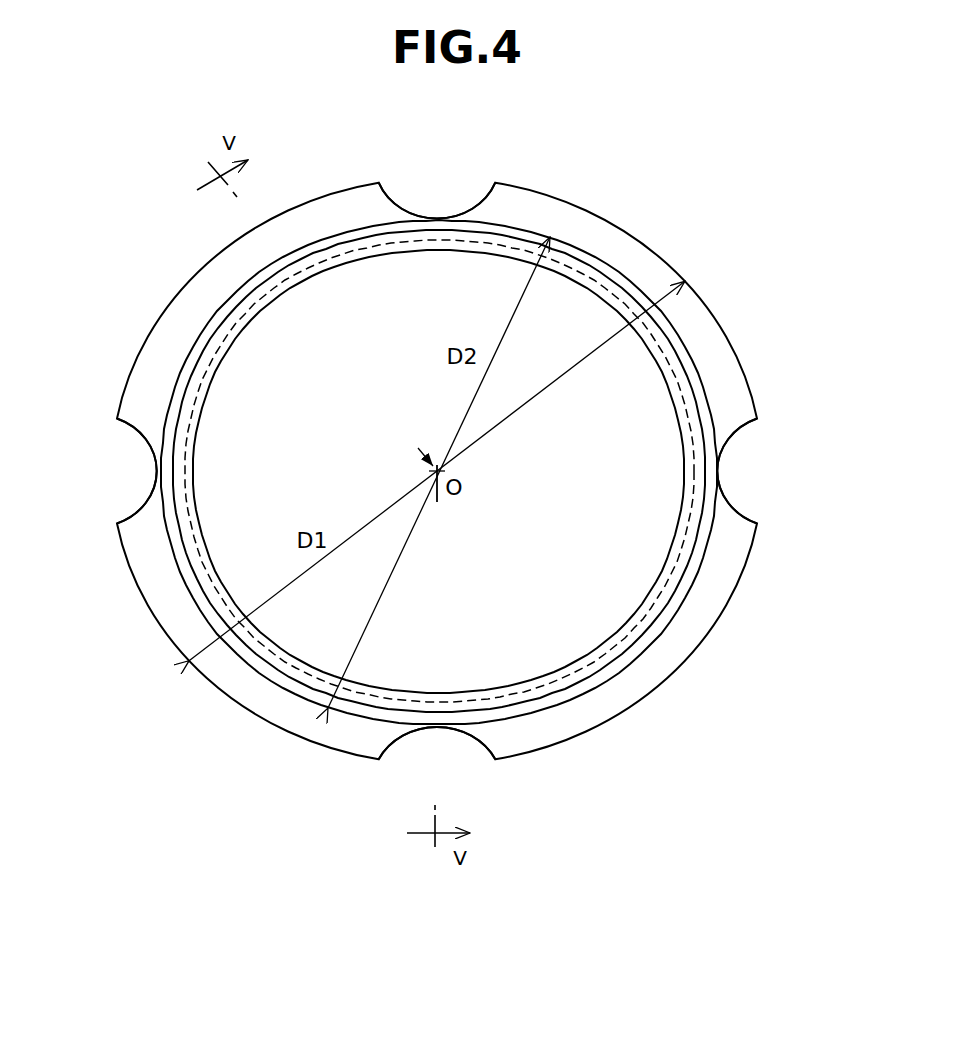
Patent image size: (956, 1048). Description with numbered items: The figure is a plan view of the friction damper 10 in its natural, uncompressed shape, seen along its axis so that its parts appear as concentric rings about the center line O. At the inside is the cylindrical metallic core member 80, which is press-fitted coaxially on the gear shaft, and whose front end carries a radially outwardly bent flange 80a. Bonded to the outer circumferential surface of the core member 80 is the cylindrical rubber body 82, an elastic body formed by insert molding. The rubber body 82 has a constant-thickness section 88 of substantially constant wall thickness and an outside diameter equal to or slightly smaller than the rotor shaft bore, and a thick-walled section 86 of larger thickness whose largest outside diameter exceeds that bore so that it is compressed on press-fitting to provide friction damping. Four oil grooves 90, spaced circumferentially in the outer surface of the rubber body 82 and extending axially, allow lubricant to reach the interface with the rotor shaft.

The friction damper 10 is at (655, 206).
The core member 80 is at (339, 279).
The flange 80a is at (217, 347).
The rubber body 82 is at (657, 702).
The thick-walled section 86 is at (703, 615).
The constant-thickness section 88 is at (553, 700).
The oil grooves 90 is at (478, 204).